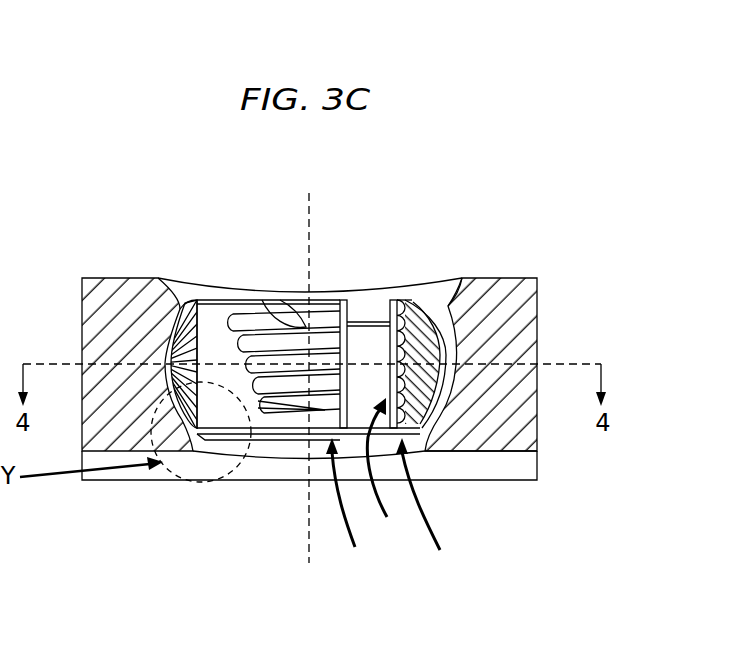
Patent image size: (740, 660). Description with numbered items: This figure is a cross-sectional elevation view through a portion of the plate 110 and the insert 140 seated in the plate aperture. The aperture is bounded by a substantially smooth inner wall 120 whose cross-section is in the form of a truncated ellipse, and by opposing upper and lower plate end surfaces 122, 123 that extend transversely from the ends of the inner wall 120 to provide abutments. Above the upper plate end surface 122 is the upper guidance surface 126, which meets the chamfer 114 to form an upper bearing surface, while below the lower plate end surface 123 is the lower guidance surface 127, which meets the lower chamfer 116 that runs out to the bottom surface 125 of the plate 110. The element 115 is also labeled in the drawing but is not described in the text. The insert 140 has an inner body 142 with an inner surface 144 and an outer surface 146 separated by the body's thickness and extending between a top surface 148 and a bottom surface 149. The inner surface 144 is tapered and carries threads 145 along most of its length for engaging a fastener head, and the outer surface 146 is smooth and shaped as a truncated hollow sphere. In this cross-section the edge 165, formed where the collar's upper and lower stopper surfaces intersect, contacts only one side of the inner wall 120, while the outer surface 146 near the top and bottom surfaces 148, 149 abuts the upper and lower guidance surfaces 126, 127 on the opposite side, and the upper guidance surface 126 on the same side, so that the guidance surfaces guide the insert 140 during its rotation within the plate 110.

The plate 110 is at (532, 462).
The chamfer 114 is at (170, 284).
The upper membrane 115 is at (522, 278).
The lower chamfer 116 is at (425, 457).
The inner wall 120 is at (428, 320).
The upper plate end surface 122 is at (160, 298).
The lower plate end surface 123 is at (445, 402).
The bottom surface 125 is at (485, 453).
The upper guidance surface 126 is at (436, 320).
The lower guidance surface 127 is at (193, 420).
The insert 140 is at (348, 507).
The inner body 142 is at (423, 510).
The inner surface 144 is at (388, 474).
The threads 145 is at (262, 316).
The outer surface 146 is at (190, 300).
The top surface 148 is at (394, 300).
The bottom surface 149 is at (292, 430).
The edge 165 is at (200, 344).